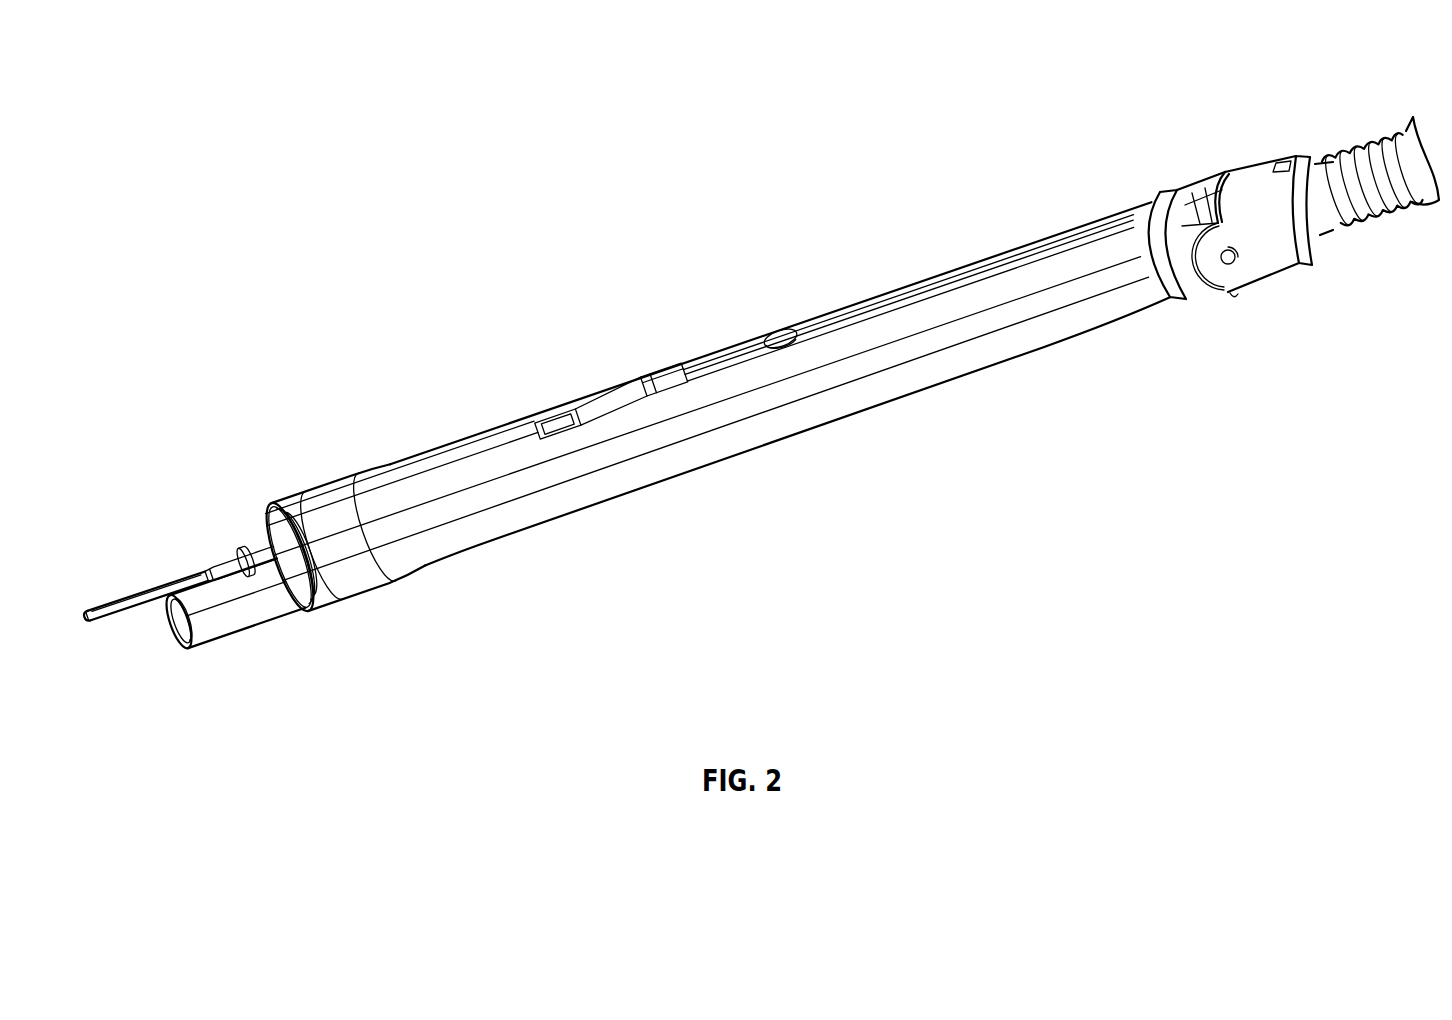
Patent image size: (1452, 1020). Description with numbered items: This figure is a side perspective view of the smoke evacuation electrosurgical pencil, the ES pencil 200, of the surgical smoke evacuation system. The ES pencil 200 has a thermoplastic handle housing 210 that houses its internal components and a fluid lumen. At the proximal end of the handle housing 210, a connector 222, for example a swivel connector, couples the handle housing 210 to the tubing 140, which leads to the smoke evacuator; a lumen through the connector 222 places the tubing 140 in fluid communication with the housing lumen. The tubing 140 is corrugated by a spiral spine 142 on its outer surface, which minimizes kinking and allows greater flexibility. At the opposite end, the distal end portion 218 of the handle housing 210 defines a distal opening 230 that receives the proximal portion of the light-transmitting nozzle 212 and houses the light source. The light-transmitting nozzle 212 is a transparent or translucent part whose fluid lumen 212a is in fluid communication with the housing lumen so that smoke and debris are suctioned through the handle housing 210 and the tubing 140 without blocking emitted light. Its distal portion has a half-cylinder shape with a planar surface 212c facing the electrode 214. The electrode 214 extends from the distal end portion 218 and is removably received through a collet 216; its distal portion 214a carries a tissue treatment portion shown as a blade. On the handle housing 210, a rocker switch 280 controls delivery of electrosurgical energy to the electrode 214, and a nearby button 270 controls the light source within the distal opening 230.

The ES pencil 200 is at (405, 182).
The handle housing 210 is at (925, 277).
The distal end portion 218 is at (345, 447).
The distal opening 230 is at (256, 519).
The collet 216 is at (252, 543).
The electrode 214 is at (148, 572).
The distal portion 214a is at (118, 607).
The light-transmitting nozzle 212 is at (274, 603).
The fluid lumen 212a is at (165, 613).
The planar surface 212c is at (205, 610).
The button 270 is at (780, 340).
The rocker switch 280 is at (663, 375).
The connector 222 is at (1167, 180).
The tubing 140 is at (1366, 142).
The spiral spine 142 is at (1392, 222).